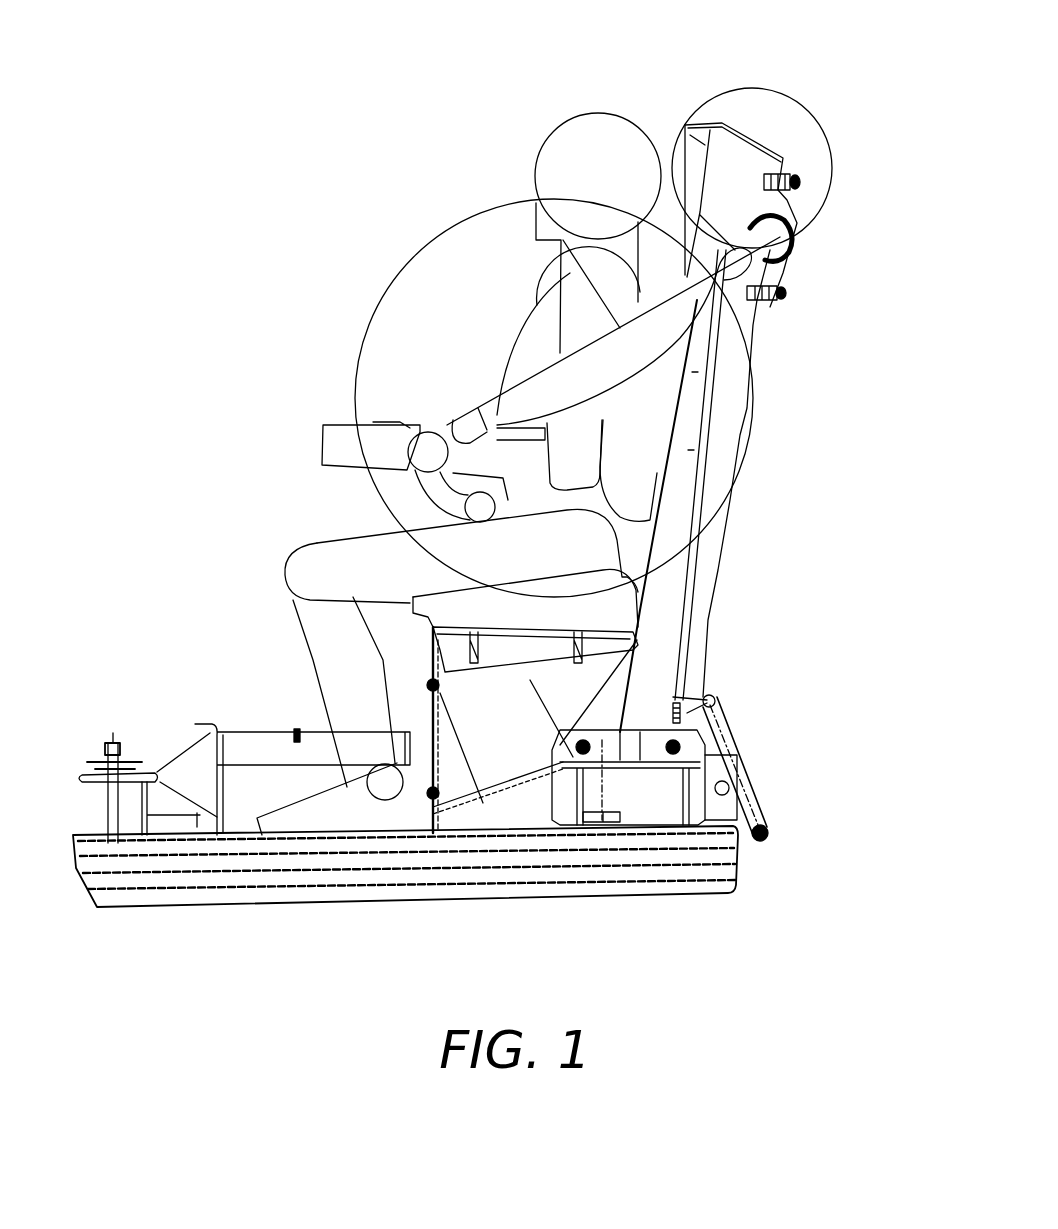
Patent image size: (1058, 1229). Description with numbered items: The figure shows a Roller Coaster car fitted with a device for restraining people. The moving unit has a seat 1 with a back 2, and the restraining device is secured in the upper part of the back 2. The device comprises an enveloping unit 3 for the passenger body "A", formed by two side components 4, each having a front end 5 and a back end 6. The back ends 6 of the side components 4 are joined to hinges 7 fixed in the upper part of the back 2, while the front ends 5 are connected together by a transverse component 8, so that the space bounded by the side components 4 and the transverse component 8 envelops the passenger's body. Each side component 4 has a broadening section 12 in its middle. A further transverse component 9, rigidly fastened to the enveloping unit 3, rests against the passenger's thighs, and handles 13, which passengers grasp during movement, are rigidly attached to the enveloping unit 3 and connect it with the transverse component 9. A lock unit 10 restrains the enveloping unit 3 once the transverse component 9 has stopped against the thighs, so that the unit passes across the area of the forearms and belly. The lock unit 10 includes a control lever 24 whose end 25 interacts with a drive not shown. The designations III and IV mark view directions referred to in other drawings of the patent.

The seat 1 is at (508, 593).
The back 2 is at (737, 137).
The enveloping unit 3 is at (552, 393).
The side component 4 is at (563, 240).
The front end 5 is at (512, 412).
The back end 6 is at (750, 290).
The hinge 7 is at (797, 227).
The transverse component 8 is at (487, 432).
The transverse component 9 is at (432, 440).
The lock unit 10 is at (737, 176).
The broadening section 12 is at (612, 365).
The handle 13 is at (353, 438).
The control lever 24 is at (752, 352).
The end of control lever 25 is at (745, 772).
The passenger body A is at (537, 328).
The section III is at (470, 432).
The section IV is at (820, 128).